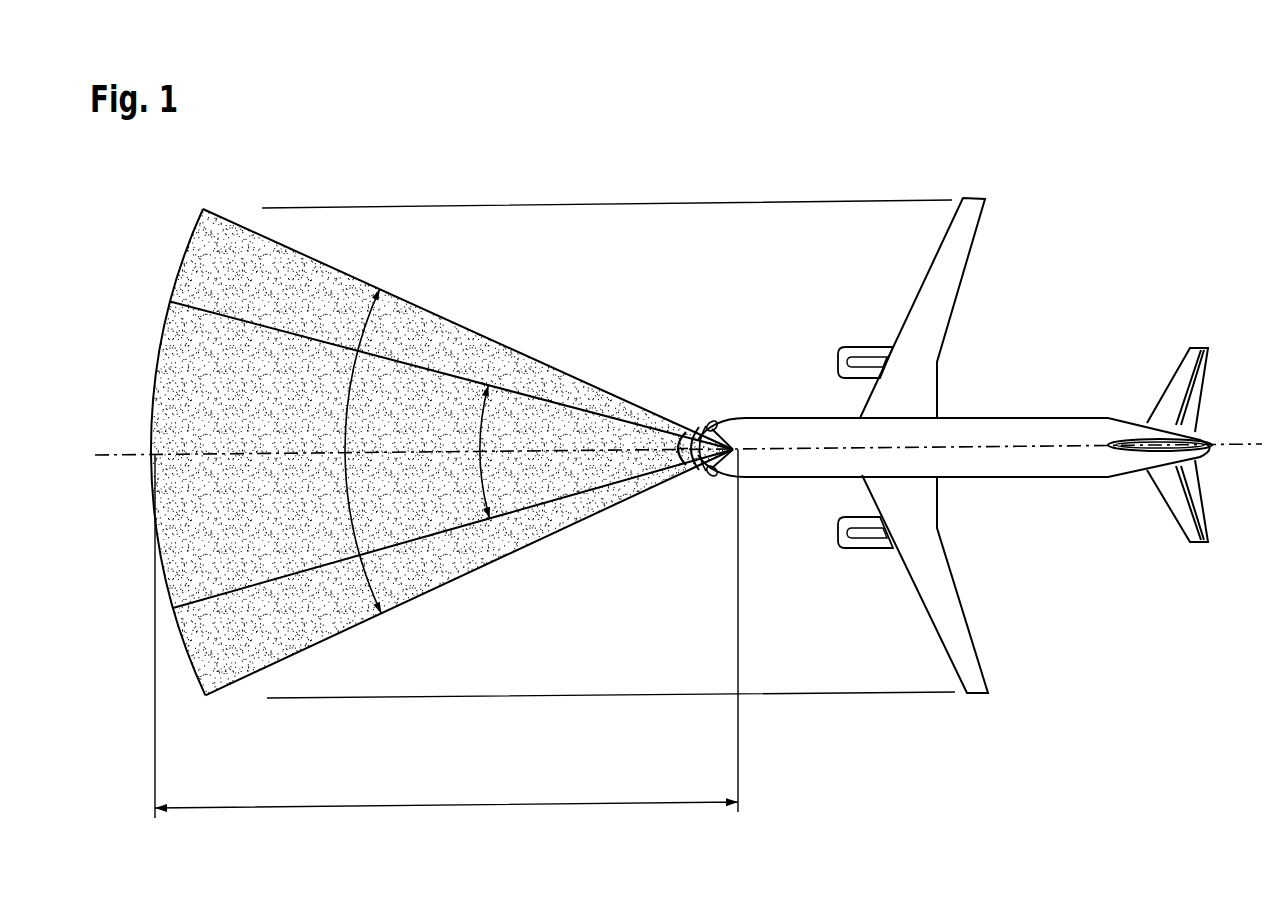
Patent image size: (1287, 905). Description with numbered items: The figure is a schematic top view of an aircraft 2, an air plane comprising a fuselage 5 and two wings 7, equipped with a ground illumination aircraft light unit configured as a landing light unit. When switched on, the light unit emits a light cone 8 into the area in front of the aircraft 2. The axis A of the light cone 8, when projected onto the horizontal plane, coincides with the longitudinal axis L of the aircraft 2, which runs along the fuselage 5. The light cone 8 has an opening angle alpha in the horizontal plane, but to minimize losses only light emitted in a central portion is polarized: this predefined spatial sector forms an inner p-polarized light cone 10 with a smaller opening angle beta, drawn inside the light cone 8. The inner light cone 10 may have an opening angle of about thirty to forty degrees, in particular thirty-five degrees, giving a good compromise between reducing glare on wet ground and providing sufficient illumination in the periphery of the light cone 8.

The aircraft 2 is at (944, 445).
The fuselage 5 is at (1032, 477).
The wings 7 is at (935, 277).
The light cone 8 is at (556, 348).
The inner p-polarized light cone 10 is at (150, 386).
The axis of the light cone A is at (676, 468).
The longitudinal axis of the aircraft L is at (1222, 455).